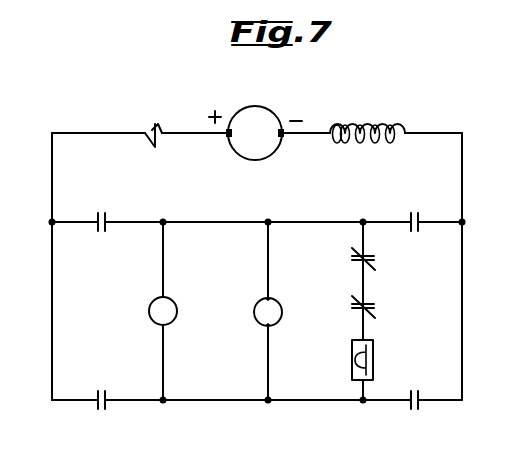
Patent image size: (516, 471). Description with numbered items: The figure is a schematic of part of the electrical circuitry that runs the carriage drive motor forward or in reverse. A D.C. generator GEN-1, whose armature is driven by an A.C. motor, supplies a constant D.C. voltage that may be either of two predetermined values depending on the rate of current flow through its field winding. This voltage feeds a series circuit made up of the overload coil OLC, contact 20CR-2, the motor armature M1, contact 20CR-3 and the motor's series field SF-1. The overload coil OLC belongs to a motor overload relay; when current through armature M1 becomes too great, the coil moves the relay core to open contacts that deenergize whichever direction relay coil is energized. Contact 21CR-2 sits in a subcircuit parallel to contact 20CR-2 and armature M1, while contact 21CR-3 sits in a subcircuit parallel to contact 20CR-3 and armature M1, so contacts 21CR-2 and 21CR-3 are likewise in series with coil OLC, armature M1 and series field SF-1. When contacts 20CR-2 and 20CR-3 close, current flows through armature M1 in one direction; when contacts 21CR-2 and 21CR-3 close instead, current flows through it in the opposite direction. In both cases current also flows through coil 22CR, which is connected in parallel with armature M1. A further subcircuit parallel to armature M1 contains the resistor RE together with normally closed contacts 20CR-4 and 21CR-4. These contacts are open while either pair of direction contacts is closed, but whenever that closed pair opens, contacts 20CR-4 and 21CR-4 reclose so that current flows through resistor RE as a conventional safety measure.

The overload coil OLC is at (151, 124).
The D.C. generator GEN-1 is at (255, 133).
The series field SF-1 is at (342, 125).
The contact 21CR-2 is at (113, 207).
The contact 20CR-3 is at (428, 210).
The normally closed contact 20CR-4 is at (373, 257).
The normally closed contact 21CR-4 is at (373, 305).
The resistor RE is at (373, 370).
The coil 22CR is at (149, 312).
The armature M1 is at (280, 321).
The contact 20CR-2 is at (97, 405).
The contact 21CR-3 is at (411, 406).